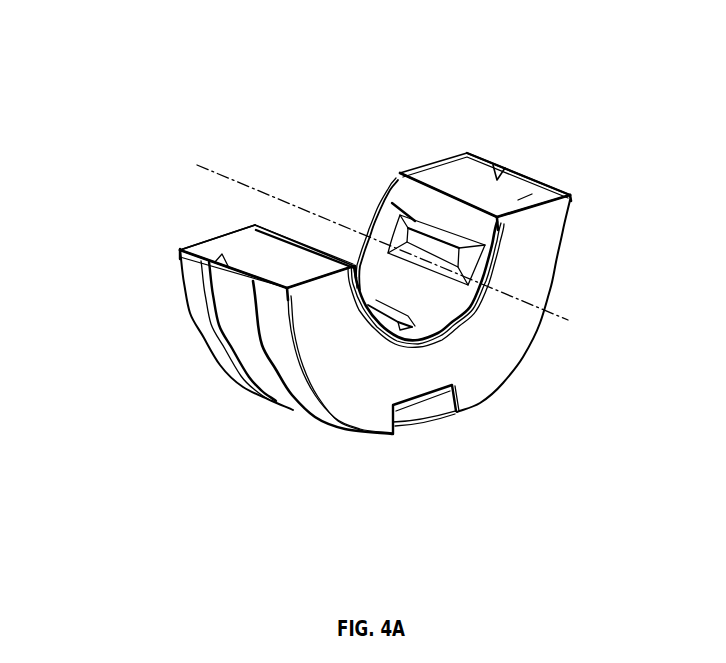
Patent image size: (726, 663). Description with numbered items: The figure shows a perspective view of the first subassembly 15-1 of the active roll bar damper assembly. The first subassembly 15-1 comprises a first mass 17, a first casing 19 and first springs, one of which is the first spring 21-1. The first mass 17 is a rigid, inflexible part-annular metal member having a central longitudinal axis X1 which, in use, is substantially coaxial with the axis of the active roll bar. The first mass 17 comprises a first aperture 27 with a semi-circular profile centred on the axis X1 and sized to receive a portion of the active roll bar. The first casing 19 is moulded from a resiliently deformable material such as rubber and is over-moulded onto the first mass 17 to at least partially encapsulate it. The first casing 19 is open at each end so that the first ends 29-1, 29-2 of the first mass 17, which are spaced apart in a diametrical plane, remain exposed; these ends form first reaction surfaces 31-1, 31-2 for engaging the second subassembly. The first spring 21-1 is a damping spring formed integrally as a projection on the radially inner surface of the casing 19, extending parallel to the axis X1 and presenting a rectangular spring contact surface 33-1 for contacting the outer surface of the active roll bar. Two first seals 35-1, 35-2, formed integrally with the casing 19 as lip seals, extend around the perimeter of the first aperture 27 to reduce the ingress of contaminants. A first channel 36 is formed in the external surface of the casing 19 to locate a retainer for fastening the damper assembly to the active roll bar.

The first subassembly 15-1 is at (265, 115).
The first mass 17 is at (525, 197).
The first casing 19 is at (545, 233).
The first spring 21-1 is at (415, 218).
The first aperture 27 is at (330, 240).
The first end 29-1 is at (222, 250).
The first end 29-2 is at (499, 176).
The first reaction surface 31-1 is at (247, 243).
The first reaction surface 31-2 is at (455, 177).
The spring contact surface 33-1 is at (381, 207).
The first seal 35-1 is at (378, 205).
The first seal 35-2 is at (492, 262).
The first channel 36 is at (250, 355).
The central longitudinal axis X1 is at (382, 234).